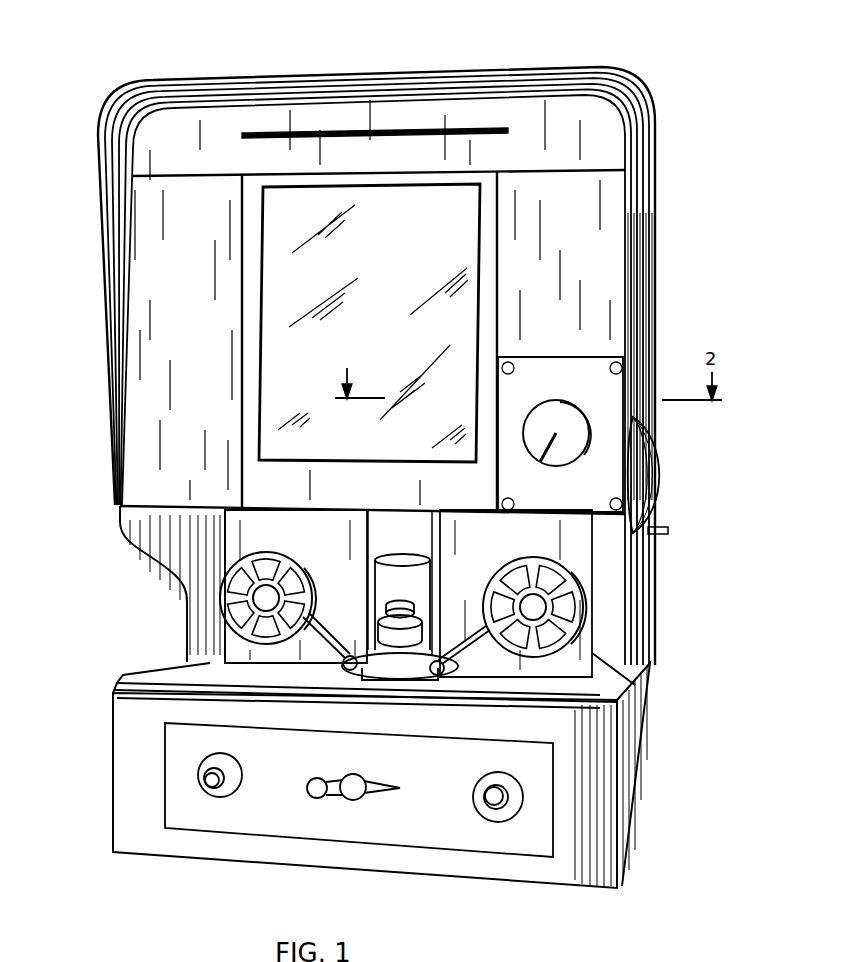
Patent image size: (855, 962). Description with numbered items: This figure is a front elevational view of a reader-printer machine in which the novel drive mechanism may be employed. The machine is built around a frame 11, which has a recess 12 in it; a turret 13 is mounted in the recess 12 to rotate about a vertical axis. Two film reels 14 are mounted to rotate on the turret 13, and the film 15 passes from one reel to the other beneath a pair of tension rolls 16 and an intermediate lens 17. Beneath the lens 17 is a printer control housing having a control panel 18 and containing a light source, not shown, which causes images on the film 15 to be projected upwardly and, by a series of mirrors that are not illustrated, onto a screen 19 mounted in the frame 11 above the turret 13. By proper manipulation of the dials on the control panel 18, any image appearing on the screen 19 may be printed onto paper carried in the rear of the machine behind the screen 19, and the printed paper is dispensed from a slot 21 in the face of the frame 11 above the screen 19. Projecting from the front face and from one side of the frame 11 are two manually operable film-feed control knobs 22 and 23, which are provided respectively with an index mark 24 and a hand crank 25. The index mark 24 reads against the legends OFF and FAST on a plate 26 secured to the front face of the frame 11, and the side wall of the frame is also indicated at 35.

The frame 11 is at (115, 456).
The recess 12 is at (210, 568).
The turret 13 is at (342, 545).
The film reels 14 is at (266, 553).
The film 15 is at (330, 638).
The tension rolls 16 is at (342, 668).
The intermediate lens 17 is at (383, 668).
The control panel 18 is at (327, 832).
The screen 19 is at (397, 262).
The slot 21 is at (444, 136).
The film-feed control knob 22 is at (537, 410).
The film-feed control knob 23 is at (655, 445).
The index mark 24 is at (556, 448).
The hand crank 25 is at (662, 530).
The plate 26 is at (566, 357).
The housing side wall 35 is at (617, 267).